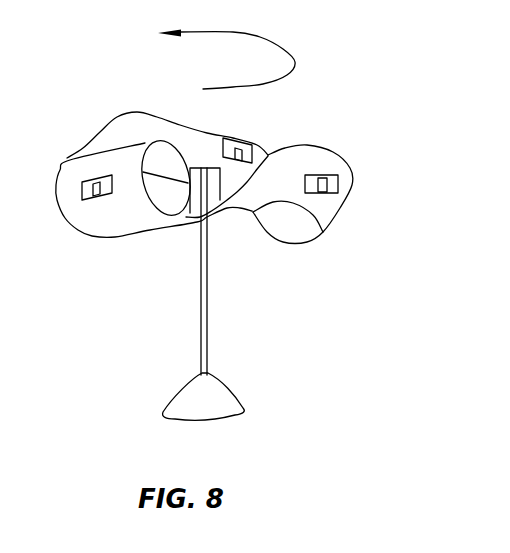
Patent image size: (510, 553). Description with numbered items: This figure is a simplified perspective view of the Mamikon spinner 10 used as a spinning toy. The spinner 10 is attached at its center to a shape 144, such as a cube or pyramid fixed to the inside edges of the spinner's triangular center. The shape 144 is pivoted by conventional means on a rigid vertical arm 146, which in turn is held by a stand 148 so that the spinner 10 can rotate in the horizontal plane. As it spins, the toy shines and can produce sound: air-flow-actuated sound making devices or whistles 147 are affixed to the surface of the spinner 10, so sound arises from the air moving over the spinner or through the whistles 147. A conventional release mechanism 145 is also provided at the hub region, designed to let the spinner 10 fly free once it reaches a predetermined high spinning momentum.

The Mamikon spinner 10 is at (64, 141).
The shape 144 is at (204, 165).
The release mechanism 145 is at (169, 224).
The rigid vertical arm 146 is at (237, 271).
The whistles 147 is at (88, 200).
The stand 148 is at (219, 418).